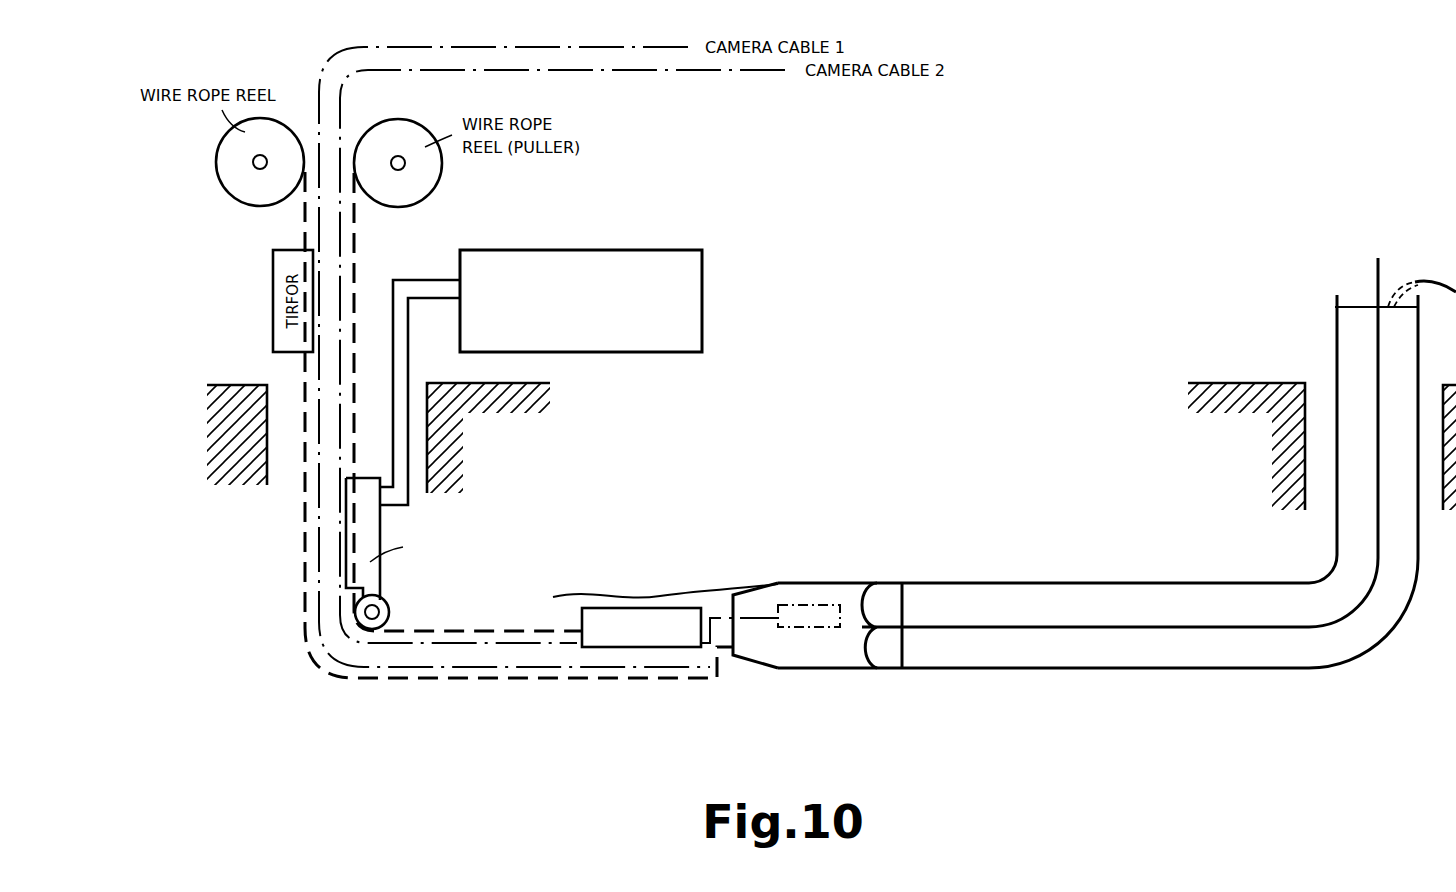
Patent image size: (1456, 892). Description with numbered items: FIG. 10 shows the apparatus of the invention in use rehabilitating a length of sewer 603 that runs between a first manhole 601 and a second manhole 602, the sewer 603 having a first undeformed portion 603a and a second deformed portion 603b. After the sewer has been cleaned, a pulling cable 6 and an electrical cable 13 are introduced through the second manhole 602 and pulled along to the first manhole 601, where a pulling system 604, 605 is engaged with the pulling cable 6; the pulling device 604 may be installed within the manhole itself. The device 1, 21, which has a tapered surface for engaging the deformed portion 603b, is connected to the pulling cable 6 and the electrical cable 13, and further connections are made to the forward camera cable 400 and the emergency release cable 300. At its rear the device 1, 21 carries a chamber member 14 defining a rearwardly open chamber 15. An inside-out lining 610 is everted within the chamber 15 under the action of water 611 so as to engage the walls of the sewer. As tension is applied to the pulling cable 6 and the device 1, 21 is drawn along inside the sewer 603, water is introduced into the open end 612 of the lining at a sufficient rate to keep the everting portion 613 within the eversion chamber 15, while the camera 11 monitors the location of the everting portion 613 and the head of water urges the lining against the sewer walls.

The device 1 is at (786, 575).
The large diameter device 21 is at (740, 590).
The pulling cable 6 is at (513, 630).
The camera 11 is at (797, 627).
The electrical cable 13 is at (487, 667).
The chamber member 14 is at (842, 668).
The chamber 15 is at (850, 650).
The emergency release cable 300 is at (442, 680).
The forward camera cable 400 is at (438, 640).
The first manhole 601 is at (1320, 405).
The second manhole 602 is at (417, 387).
The sewer 603 is at (748, 669).
The first undeformed portion 603a is at (1047, 583).
The second deformed portion 603b is at (643, 596).
The pulling device 604 is at (365, 540).
The pulling system 605 is at (616, 262).
The inside-out lining 610 is at (1131, 627).
The water 611 is at (1331, 580).
The open end 612 is at (1356, 305).
The everting portion 613 is at (863, 590).